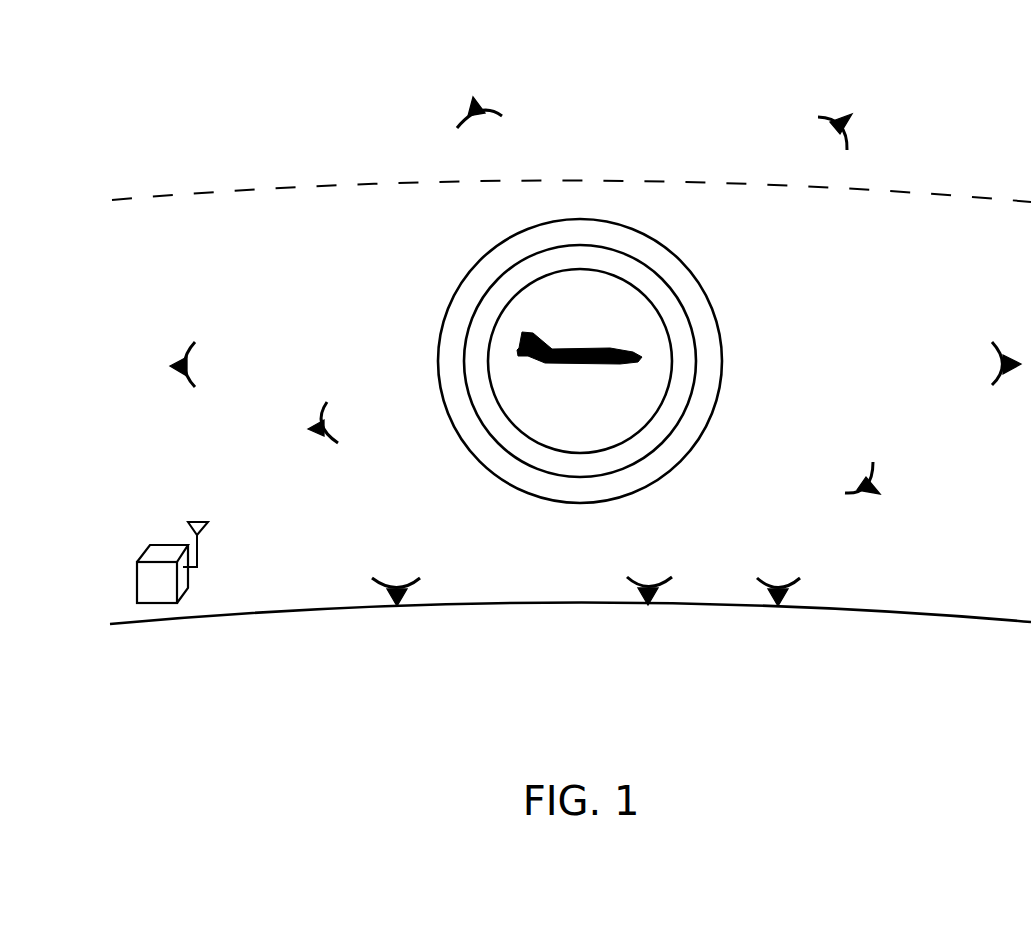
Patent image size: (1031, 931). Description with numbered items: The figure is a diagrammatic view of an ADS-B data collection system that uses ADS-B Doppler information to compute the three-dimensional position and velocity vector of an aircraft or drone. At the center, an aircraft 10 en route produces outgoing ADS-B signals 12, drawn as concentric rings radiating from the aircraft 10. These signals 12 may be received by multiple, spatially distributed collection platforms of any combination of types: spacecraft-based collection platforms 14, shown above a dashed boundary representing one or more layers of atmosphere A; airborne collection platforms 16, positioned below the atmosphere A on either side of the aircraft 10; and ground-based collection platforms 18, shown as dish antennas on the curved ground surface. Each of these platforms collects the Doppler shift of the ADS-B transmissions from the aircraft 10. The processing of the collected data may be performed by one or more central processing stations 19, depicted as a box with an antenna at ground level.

The layers of atmosphere A is at (210, 193).
The aircraft 10 is at (597, 364).
The outgoing ADS-B signals 12 is at (707, 277).
The spacecraft-based collection platforms 14 is at (418, 104).
The airborne collection platforms 16 is at (226, 350).
The ground-based collection platforms 18 is at (399, 557).
The central processing stations 19 is at (143, 575).